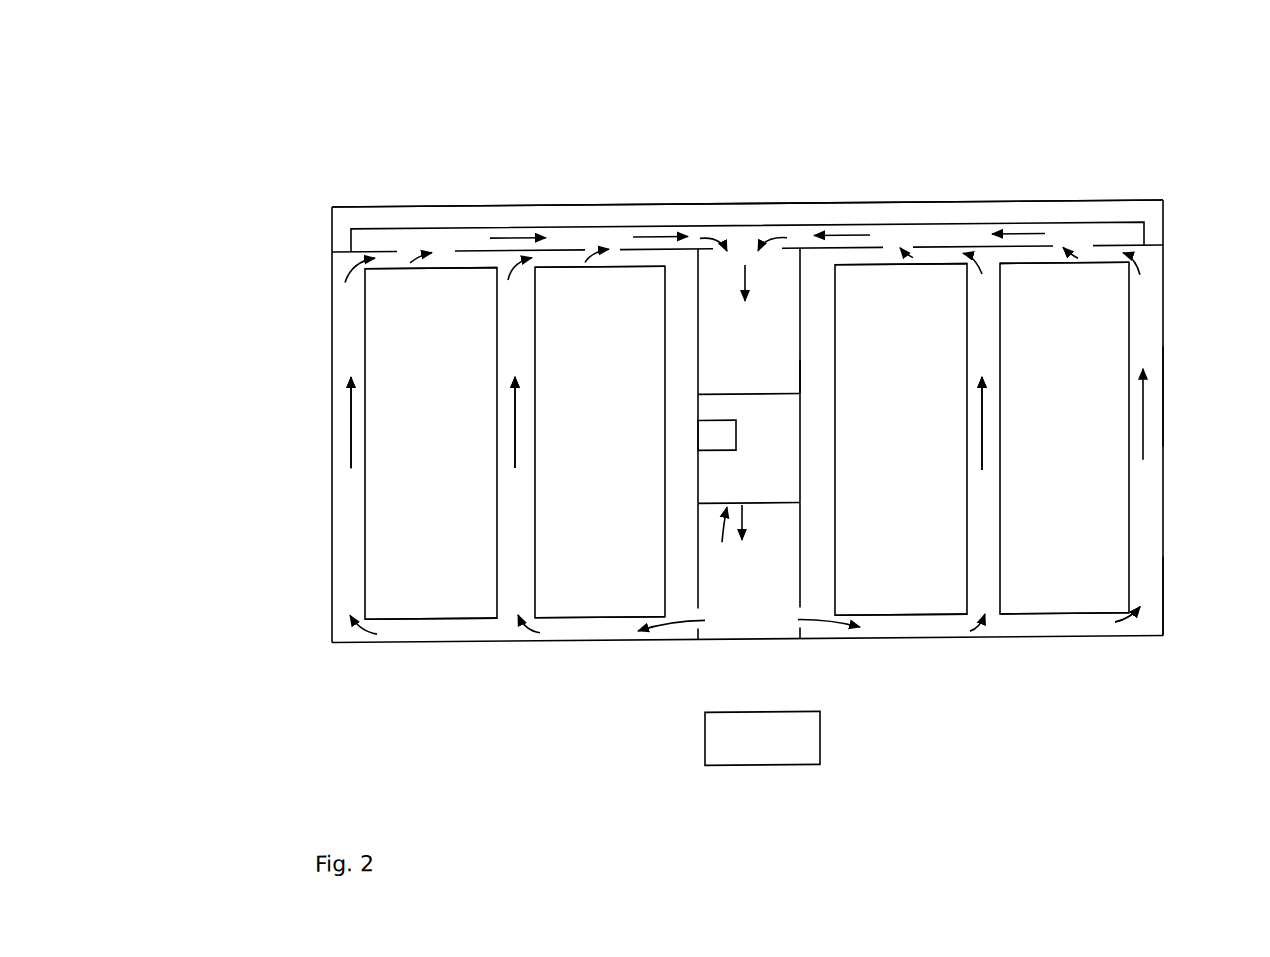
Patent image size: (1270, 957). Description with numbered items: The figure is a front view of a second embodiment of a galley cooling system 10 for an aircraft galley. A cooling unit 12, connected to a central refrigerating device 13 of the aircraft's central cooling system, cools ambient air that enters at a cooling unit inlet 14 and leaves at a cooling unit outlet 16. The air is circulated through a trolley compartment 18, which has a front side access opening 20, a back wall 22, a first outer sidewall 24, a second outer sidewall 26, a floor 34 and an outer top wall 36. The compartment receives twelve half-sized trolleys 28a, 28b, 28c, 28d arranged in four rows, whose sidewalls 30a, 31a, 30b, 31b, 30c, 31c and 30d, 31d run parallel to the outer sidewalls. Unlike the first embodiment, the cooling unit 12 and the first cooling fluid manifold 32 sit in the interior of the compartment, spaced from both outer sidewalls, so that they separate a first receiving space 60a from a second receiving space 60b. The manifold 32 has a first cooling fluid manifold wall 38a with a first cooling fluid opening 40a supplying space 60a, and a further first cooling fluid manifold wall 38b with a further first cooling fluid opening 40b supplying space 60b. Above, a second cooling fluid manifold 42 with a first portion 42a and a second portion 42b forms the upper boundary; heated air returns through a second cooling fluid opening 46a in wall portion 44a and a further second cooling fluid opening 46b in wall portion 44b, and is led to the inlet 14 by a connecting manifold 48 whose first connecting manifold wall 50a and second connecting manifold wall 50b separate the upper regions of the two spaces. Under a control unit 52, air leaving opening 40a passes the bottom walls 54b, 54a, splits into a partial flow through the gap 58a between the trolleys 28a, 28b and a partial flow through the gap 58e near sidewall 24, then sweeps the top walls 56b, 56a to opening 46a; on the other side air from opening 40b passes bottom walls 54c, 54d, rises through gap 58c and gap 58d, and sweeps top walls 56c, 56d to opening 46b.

The galley cooling system 10 is at (1074, 99).
The cooling unit 12 is at (735, 487).
The central refrigerating device 13 is at (778, 742).
The cooling unit inlet 14 is at (759, 391).
The cooling unit outlet 16 is at (749, 537).
The trolley compartment 18 is at (1170, 285).
The front side access opening 20 is at (1163, 587).
The back wall 22 is at (717, 225).
The first outer sidewall 24 is at (333, 466).
The second outer sidewall 26 is at (1165, 414).
The trolleys of the first row 28a is at (410, 530).
The trolleys of the second row 28b is at (583, 532).
The trolleys of the third row 28c is at (885, 529).
The trolleys of the fourth row 28d is at (1050, 531).
The sidewall of the first-row trolleys 30a is at (365, 561).
The sidewall of the second-row trolleys 30b is at (535, 581).
The sidewall of the third-row trolleys 30c is at (835, 582).
The sidewall of the fourth-row trolleys 30d is at (985, 581).
The sidewall of the first-row trolleys 31a is at (497, 350).
The sidewall of the second-row trolleys 31b is at (733, 302).
The sidewall of the third-row trolleys 31c is at (967, 352).
The sidewall of the fourth-row trolleys 31d is at (1130, 512).
The first cooling fluid manifold 32 is at (753, 630).
The floor 34 is at (747, 692).
The outer top wall 36 is at (840, 201).
The first cooling fluid manifold wall 38a is at (700, 587).
The further first cooling fluid manifold wall 38b is at (800, 534).
The first cooling fluid opening 40a is at (697, 609).
The further first cooling fluid opening 40b is at (800, 612).
The second cooling fluid manifold 42 is at (755, 233).
The first portion of the second cooling fluid manifold 42a is at (628, 247).
The second portion of the second cooling fluid manifold 42b is at (986, 234).
The second cooling fluid manifold wall portion 44a is at (488, 248).
The second cooling fluid manifold wall portion 44b is at (952, 248).
The second cooling fluid opening 46a is at (405, 251).
The further second cooling fluid opening 46b is at (932, 248).
The connecting manifold 48 is at (800, 380).
The first connecting manifold wall 50a is at (698, 310).
The second connecting manifold wall 50b is at (800, 319).
The control unit 52 is at (715, 437).
The bottom wall of the first-row trolleys 54a is at (442, 617).
The bottom wall of the second-row trolleys 54b is at (602, 617).
The bottom wall of the third-row trolleys 54c is at (900, 617).
The bottom wall of the fourth-row trolleys 54d is at (1055, 617).
The top wall of the first-row trolleys 56a is at (402, 265).
The top wall of the second-row trolleys 56b is at (590, 266).
The top wall of the third-row trolleys 56c is at (892, 268).
The top wall of the fourth-row trolleys 56d is at (1057, 268).
The gap between the first- and second-row trolleys 58a is at (515, 494).
The gap between the third- and fourth-row trolleys 58c is at (985, 480).
The gap between the fourth-row trolleys and the second outer sidewall 58d is at (1137, 472).
The gap between the first-row trolleys and the first outer sidewall 58e is at (345, 480).
The first receiving space 60a is at (340, 298).
The second receiving space 60b is at (1152, 344).